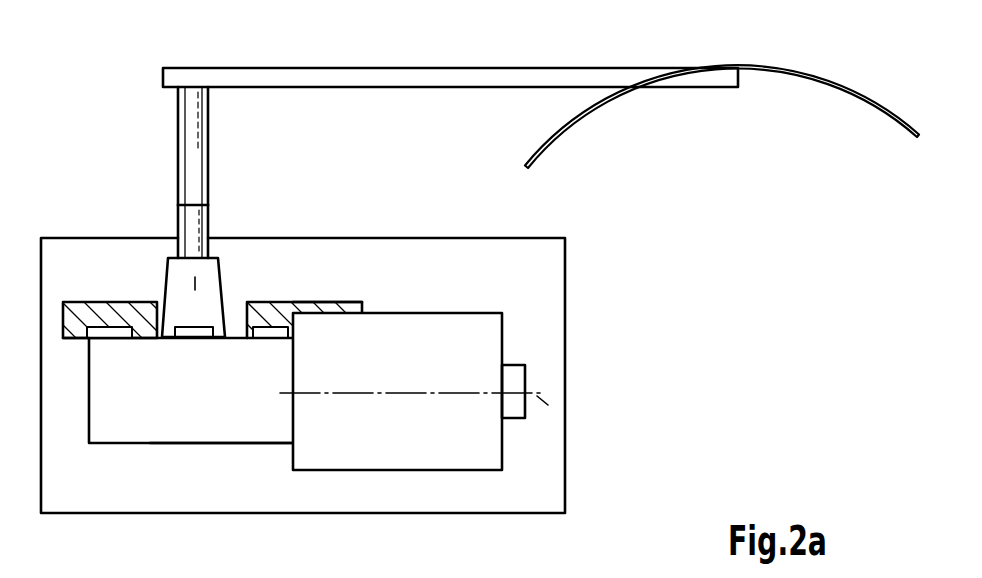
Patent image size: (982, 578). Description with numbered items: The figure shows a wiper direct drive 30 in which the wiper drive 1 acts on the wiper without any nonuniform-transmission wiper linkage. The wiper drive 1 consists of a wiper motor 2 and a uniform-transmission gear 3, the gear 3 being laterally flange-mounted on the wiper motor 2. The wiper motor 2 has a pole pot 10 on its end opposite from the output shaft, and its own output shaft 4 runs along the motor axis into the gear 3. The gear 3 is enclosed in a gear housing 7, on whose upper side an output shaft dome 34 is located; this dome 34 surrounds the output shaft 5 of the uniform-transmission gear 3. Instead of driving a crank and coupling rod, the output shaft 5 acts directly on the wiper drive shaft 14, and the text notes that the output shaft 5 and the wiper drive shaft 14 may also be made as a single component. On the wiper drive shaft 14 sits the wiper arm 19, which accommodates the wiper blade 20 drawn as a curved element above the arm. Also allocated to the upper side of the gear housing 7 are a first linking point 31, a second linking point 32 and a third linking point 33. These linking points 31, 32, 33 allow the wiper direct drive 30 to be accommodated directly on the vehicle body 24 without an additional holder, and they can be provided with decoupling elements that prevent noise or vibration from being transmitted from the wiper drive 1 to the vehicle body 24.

The wiper drive 1 is at (586, 260).
The wiper motor 2 is at (490, 445).
The uniform-transmission gear 3 is at (118, 428).
The output shaft of the wiper motor 4 is at (550, 405).
The output shaft 5 is at (183, 218).
The gear housing 7 is at (172, 445).
The pole pot 10 is at (522, 376).
The wiper drive shaft 14 is at (207, 165).
The wiper arm 19 is at (302, 75).
The wiper blade 20 is at (600, 117).
The vehicle body 24 is at (357, 303).
The wiper direct drive 30 is at (92, 206).
The first linking point 31 is at (102, 328).
The second linking point 32 is at (187, 340).
The third linking point 33 is at (281, 325).
The output shaft dome 34 is at (209, 278).